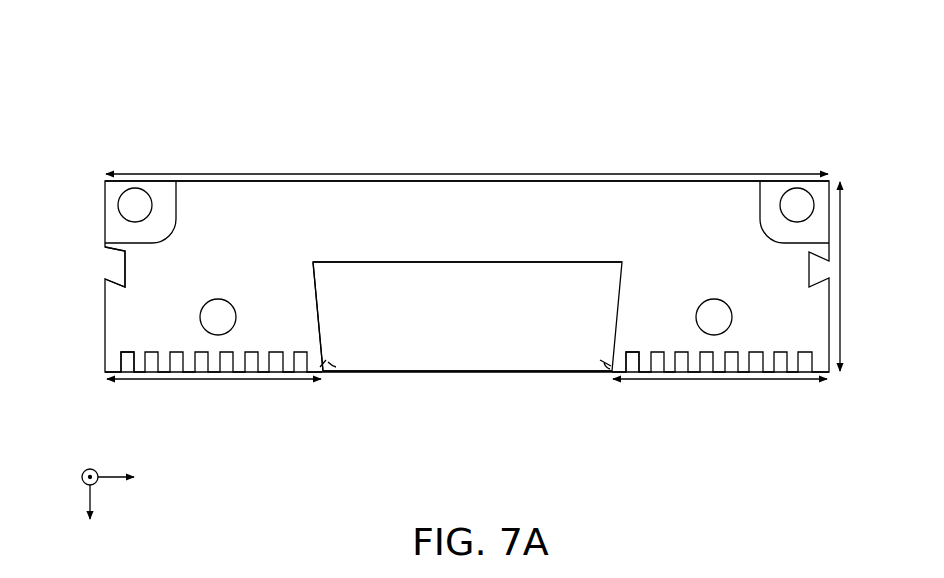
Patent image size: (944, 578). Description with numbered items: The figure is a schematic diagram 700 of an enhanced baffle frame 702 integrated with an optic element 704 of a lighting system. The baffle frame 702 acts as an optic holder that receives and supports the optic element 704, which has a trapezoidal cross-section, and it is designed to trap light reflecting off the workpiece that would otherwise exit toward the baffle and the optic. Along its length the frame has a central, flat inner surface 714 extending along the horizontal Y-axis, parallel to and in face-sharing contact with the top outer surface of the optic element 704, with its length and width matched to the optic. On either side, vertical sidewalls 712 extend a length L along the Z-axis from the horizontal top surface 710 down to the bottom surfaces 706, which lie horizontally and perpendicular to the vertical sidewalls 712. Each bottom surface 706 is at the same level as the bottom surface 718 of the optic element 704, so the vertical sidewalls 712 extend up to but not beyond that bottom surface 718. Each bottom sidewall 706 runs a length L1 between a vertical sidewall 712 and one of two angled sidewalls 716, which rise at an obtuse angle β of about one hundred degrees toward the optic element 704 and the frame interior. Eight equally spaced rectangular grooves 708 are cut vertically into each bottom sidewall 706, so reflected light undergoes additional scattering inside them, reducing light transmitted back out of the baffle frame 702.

The schematic diagram 700 is at (456, 275).
The baffle frame 702 is at (262, 231).
The optic element 704 is at (480, 326).
The bottom surface 706 is at (223, 396).
The grooves 708 is at (182, 362).
The top surface 710 is at (383, 181).
The vertical sidewall 712 is at (105, 322).
The inner surface 714 is at (380, 267).
The angled sidewall 716 is at (317, 322).
The bottom surface of the optic element 718 is at (470, 372).